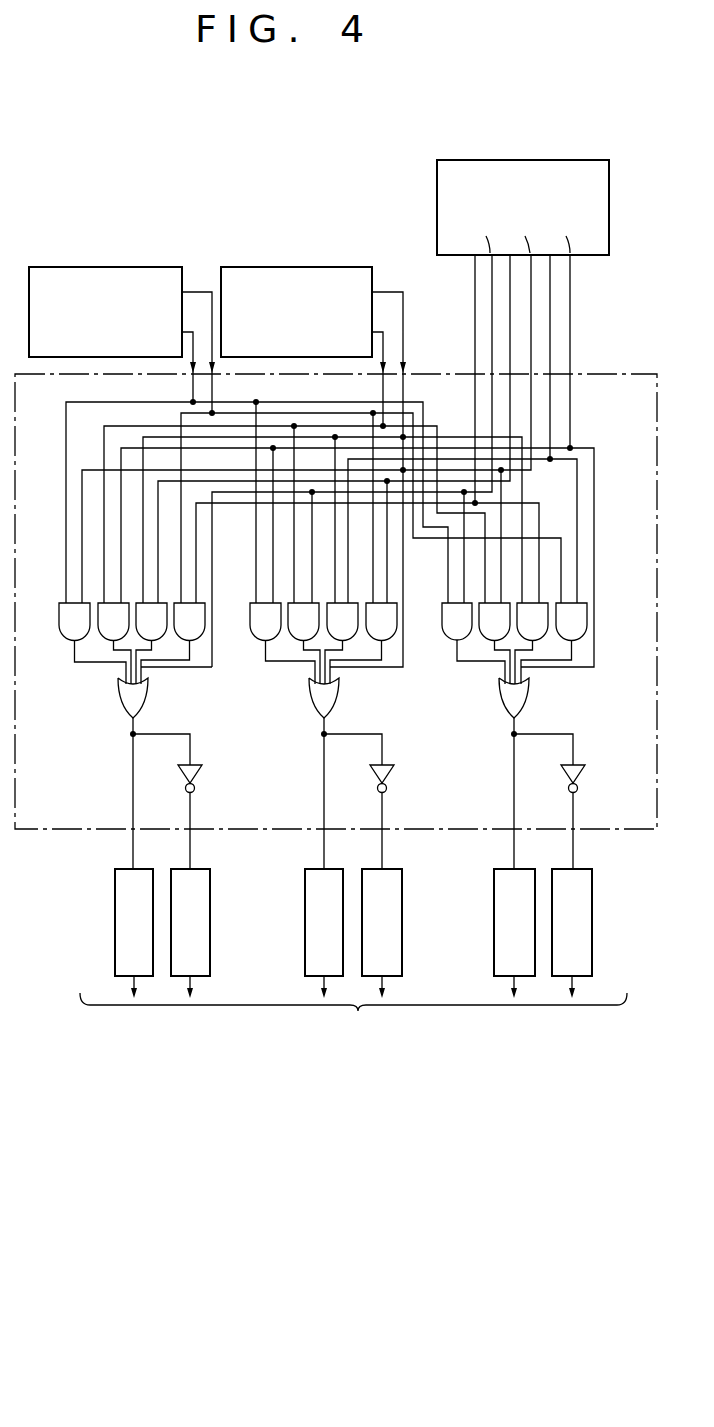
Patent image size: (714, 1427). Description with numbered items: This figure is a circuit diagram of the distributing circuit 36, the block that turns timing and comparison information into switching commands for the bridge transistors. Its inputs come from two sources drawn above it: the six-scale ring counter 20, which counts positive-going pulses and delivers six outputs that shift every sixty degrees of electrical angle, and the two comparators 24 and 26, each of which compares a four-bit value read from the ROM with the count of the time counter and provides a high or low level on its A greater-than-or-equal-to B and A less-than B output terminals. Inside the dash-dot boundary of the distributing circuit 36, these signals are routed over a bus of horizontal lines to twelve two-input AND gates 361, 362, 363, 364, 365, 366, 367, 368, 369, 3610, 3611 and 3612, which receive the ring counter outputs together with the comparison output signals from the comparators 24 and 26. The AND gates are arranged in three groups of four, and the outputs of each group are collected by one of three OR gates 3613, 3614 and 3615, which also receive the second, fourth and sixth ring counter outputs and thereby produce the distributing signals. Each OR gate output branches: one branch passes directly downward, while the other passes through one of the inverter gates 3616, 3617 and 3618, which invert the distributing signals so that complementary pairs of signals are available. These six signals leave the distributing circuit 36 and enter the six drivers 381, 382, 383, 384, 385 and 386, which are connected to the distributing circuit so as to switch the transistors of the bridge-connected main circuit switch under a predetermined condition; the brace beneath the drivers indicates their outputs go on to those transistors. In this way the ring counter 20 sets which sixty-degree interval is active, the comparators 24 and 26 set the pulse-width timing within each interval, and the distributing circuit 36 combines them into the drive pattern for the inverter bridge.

The 6-scale of ring counter 20 is at (549, 160).
The comparator 24 is at (132, 267).
The comparator 26 is at (325, 267).
The distributing circuit 36 is at (648, 374).
The AND gate 361 is at (60, 632).
The AND gate 362 is at (104, 637).
The AND gate 363 is at (157, 637).
The AND gate 364 is at (200, 622).
The AND gate 365 is at (250, 612).
The AND gate 366 is at (298, 637).
The AND gate 367 is at (345, 637).
The AND gate 368 is at (393, 622).
The AND gate 369 is at (442, 612).
The AND gate 3610 is at (490, 637).
The AND gate 3611 is at (536, 637).
The AND gate 3612 is at (585, 622).
The OR gate 3613 is at (122, 700).
The OR gate 3614 is at (312, 700).
The OR gate 3615 is at (502, 700).
The inverter gate 3616 is at (200, 775).
The inverter gate 3617 is at (392, 775).
The inverter gate 3618 is at (587, 775).
The driver 381 is at (114, 890).
The driver 382 is at (211, 890).
The driver 383 is at (305, 890).
The driver 384 is at (403, 890).
The driver 385 is at (494, 890).
The driver 386 is at (593, 890).